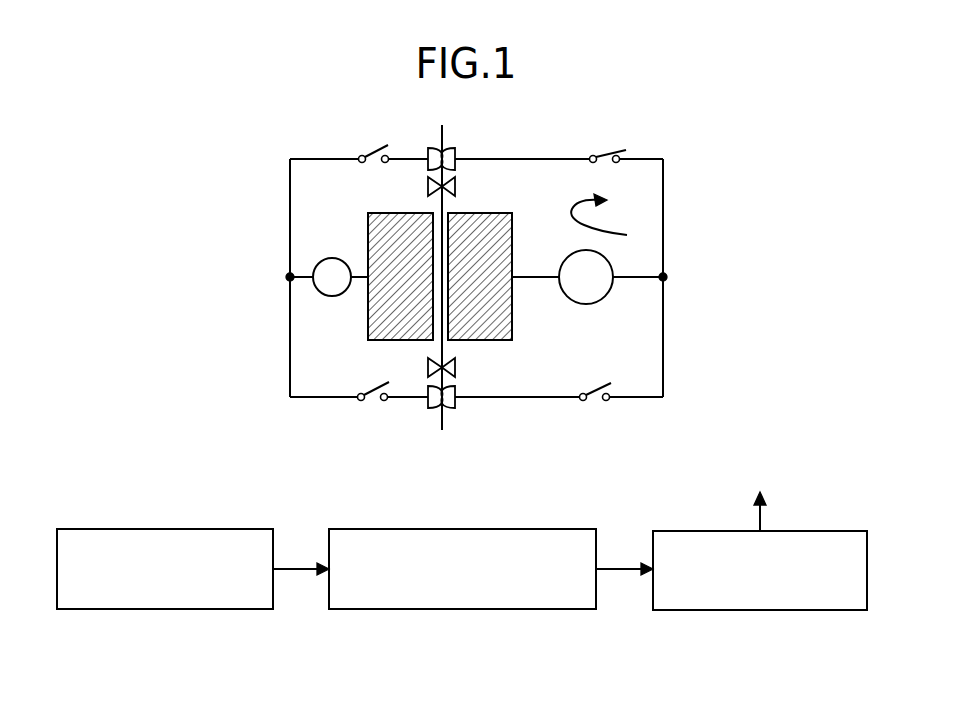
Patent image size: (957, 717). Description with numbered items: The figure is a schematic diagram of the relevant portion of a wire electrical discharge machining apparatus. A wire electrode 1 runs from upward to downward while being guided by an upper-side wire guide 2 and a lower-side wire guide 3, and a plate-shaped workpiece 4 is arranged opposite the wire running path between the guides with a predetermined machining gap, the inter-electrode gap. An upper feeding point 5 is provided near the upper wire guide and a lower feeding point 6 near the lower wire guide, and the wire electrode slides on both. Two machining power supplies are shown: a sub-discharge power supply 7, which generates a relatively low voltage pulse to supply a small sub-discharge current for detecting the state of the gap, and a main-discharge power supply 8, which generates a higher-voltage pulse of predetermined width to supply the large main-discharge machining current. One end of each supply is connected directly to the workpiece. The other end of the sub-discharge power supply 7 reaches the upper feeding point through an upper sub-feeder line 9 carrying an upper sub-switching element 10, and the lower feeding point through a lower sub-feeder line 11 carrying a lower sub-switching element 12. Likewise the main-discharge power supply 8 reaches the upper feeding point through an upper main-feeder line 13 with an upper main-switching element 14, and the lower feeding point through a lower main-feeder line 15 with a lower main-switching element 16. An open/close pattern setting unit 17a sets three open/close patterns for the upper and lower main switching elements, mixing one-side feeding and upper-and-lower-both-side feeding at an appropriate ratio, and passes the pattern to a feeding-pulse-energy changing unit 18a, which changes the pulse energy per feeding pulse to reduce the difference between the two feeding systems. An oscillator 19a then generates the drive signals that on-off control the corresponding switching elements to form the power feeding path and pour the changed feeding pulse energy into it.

The wire electrode 1 is at (442, 128).
The upper-side wire guide 2 is at (455, 190).
The lower-side wire guide 3 is at (455, 368).
The workpiece 4 is at (512, 327).
The upper feeding point 5 is at (455, 153).
The lower feeding point 6 is at (455, 403).
The sub-discharge power supply 7 is at (336, 296).
The main-discharge power supply 8 is at (592, 304).
The upper sub-feeder line 9 is at (306, 159).
The upper sub-switching element 10 is at (386, 149).
The lower sub-feeder line 11 is at (306, 397).
The lower sub-switching element 12 is at (362, 401).
The upper main-feeder line 13 is at (552, 159).
The upper main-switching element 14 is at (612, 150).
The lower main-feeder line 15 is at (517, 397).
The lower main-switching element 16 is at (585, 401).
The open/close pattern setting unit 17a is at (228, 609).
The feeding-pulse-energy changing unit 18a is at (540, 609).
The oscillator 19a is at (828, 610).